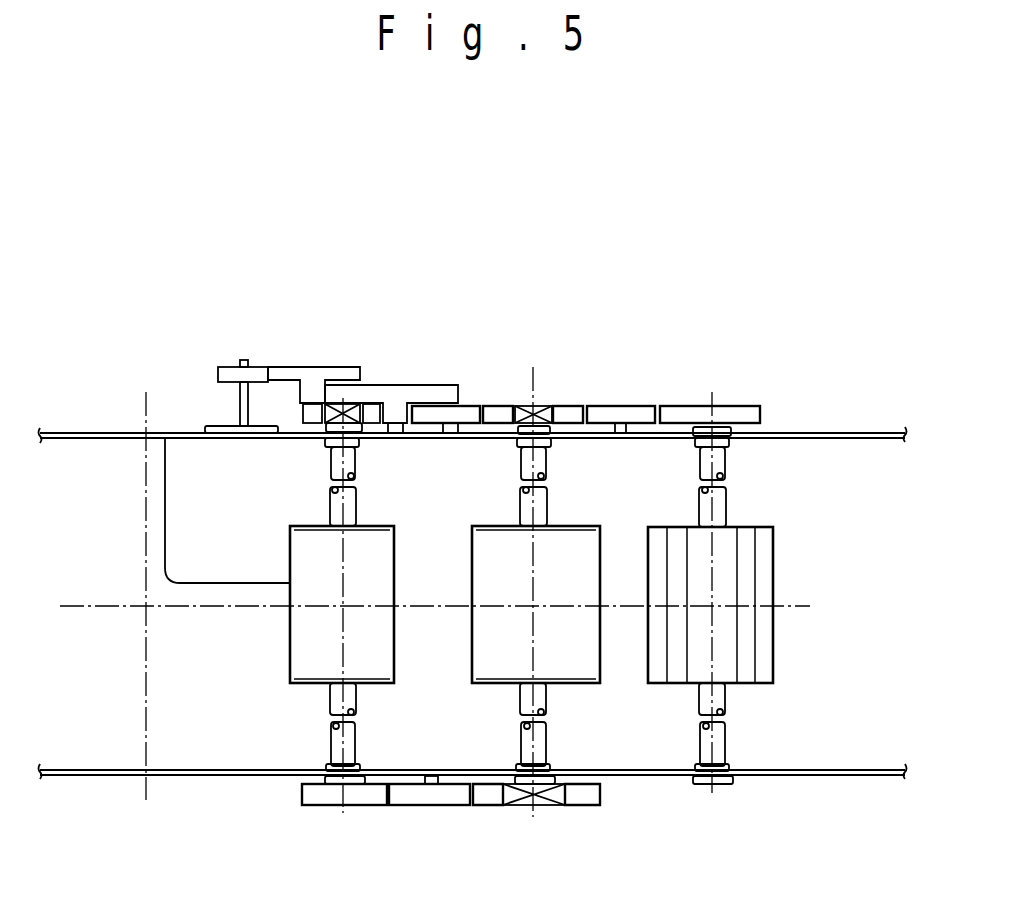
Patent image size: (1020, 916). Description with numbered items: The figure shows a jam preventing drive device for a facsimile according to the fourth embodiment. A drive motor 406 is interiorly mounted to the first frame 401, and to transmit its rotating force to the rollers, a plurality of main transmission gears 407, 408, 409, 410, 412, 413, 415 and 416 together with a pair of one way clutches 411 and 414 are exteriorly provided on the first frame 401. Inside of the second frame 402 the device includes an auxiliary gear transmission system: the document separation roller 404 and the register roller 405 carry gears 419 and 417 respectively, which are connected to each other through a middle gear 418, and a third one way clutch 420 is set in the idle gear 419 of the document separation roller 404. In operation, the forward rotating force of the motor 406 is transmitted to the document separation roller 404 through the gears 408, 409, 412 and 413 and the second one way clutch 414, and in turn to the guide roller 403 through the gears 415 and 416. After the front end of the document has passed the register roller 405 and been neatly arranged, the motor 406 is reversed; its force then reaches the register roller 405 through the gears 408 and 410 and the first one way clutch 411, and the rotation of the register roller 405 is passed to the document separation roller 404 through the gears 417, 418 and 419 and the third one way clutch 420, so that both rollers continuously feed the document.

The first frame 401 is at (80, 430).
The second frame 402 is at (102, 778).
The guide roller 403 is at (726, 754).
The document separation roller 404 is at (548, 758).
The register roller 405 is at (330, 746).
The drive motor 406 is at (188, 473).
The main transmission gear 407 is at (218, 360).
The main transmission gear 408 is at (312, 366).
The main transmission gear 409 is at (410, 384).
The main transmission gear 410 is at (303, 417).
The first one way clutch 411 is at (358, 417).
The main transmission gear 412 is at (462, 404).
The main transmission gear 413 is at (574, 404).
The second one way clutch 414 is at (515, 404).
The main transmission gear 415 is at (626, 425).
The main transmission gear 416 is at (734, 406).
The gear 417 is at (317, 806).
The middle gear 418 is at (428, 806).
The idle gear 419 is at (490, 806).
The third one way clutch 420 is at (546, 808).